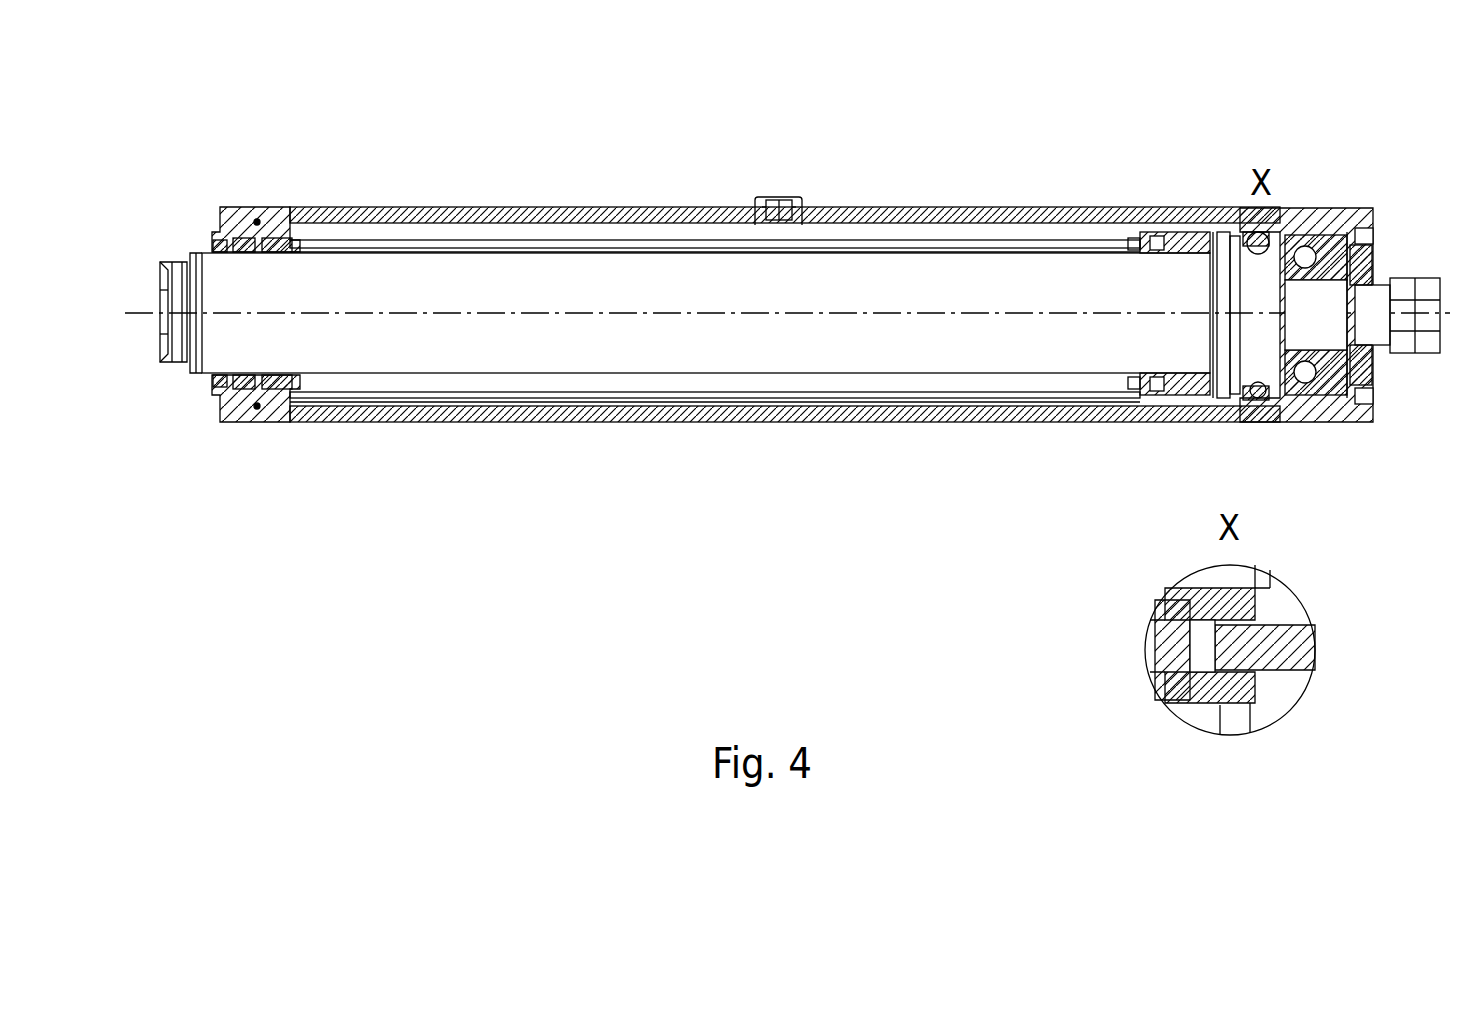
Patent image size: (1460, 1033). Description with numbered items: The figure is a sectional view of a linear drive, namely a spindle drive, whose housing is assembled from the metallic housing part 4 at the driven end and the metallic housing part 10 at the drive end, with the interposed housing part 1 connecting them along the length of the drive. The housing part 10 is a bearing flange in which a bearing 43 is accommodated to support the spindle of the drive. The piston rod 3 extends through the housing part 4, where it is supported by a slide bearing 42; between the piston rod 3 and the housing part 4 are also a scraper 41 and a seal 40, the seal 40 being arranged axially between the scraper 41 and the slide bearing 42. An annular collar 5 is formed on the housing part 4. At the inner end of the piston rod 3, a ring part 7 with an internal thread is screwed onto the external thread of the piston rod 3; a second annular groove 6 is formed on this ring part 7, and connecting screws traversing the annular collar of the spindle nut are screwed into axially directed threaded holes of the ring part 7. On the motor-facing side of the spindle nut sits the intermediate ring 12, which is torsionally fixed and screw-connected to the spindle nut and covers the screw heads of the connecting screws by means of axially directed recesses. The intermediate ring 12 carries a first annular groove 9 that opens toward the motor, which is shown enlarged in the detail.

The cylinder tube 1 is at (478, 415).
The piston rod 3 is at (415, 292).
The end cap 4 is at (257, 222).
The liner 5 is at (320, 420).
The guide ring 6 is at (1138, 234).
The piston 7 is at (1165, 240).
The seal 9 is at (1245, 405).
The end cover 10 is at (1323, 413).
The plate 12 is at (1250, 233).
The seal 40 is at (225, 215).
The wiper 41 is at (205, 228).
The bushing 42 is at (290, 222).
The bearing 43 is at (1325, 235).